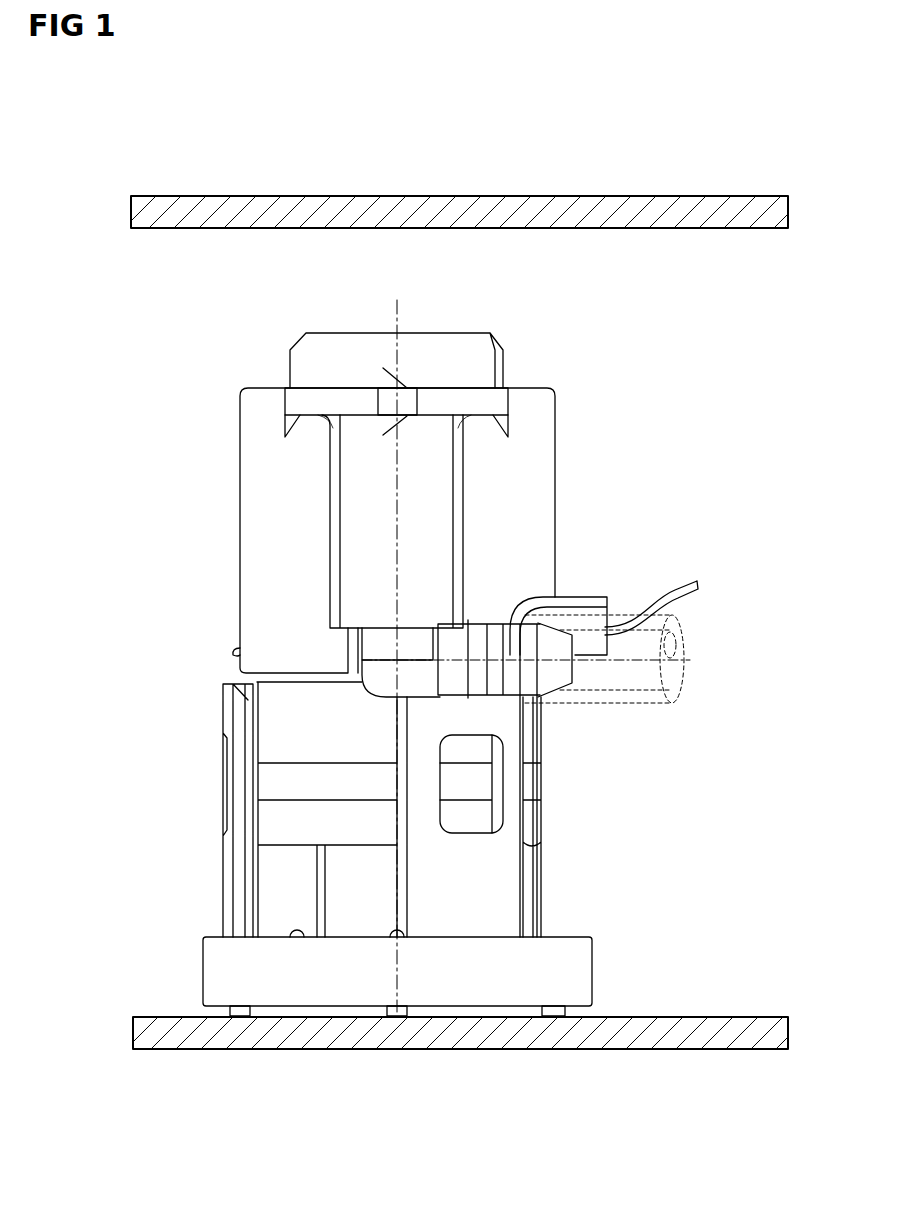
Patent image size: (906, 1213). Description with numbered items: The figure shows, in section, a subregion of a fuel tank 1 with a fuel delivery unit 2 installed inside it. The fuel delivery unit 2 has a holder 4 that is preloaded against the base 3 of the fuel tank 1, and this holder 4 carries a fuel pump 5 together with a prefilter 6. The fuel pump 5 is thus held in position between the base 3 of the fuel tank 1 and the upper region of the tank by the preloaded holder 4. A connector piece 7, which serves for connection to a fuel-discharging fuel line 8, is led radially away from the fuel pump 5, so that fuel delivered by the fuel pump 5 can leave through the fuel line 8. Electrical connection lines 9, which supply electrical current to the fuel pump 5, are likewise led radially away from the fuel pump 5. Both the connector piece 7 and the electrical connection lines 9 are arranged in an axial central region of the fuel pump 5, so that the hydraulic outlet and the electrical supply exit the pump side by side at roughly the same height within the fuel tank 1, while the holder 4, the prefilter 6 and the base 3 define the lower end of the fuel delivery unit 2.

The fuel tank 1 is at (693, 196).
The fuel delivery unit 2 is at (548, 319).
The base 3 is at (184, 1035).
The holder 4 is at (293, 980).
The fuel pump 5 is at (595, 438).
The prefilter 6 is at (348, 1012).
The connector piece 7 is at (553, 678).
The fuel line 8 is at (640, 682).
The electrical connection lines 9 is at (666, 584).